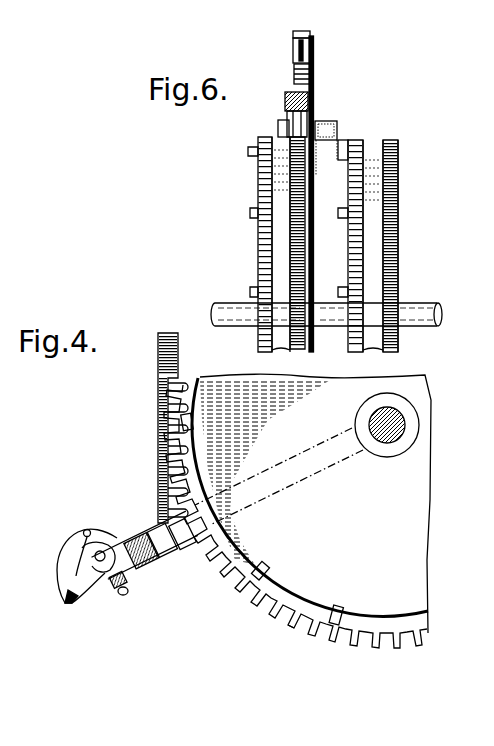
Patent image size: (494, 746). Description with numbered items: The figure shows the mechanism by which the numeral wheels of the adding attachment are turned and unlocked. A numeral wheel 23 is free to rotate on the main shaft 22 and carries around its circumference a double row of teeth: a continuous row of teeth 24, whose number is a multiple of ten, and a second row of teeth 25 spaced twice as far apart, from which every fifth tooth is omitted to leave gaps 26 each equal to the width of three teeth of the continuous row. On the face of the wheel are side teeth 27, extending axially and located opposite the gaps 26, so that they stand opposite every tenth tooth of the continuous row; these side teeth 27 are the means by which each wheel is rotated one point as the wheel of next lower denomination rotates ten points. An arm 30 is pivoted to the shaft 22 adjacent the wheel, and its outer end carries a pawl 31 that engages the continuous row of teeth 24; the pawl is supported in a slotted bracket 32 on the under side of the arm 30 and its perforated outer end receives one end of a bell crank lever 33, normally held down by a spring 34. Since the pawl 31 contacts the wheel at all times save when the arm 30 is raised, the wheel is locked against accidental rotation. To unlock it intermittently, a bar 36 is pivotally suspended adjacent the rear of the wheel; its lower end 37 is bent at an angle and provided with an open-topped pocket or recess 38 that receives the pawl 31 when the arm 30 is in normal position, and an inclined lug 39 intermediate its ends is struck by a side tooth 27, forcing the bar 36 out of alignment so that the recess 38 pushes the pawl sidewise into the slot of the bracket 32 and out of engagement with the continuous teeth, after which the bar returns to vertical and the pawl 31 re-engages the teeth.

In FIG. 6, the main shaft 22 is at (442, 316).
In FIG. 4, the main shaft 22 is at (419, 425).
In FIG. 6, the numeral wheel 23 is at (281, 252).
In FIG. 4, the numeral wheel 23 is at (418, 562).
In FIG. 6, the continuous row of teeth 24 is at (398, 142).
In FIG. 4, the continuous row of teeth 24 is at (330, 640).
In FIG. 6, the second row of teeth 25 is at (385, 138).
In FIG. 4, the second row of teeth 25 is at (294, 636).
In FIG. 6, the gaps 26 is at (345, 140).
In FIG. 6, the side teeth 27 is at (248, 152).
In FIG. 4, the side teeth 27 is at (266, 572).
In FIG. 6, the arm 30 is at (318, 55).
In FIG. 4, the arm 30 is at (298, 468).
In FIG. 6, the pawl 31 is at (288, 112).
In FIG. 4, the pawl 31 is at (166, 568).
In FIG. 6, the slotted bracket 32 is at (298, 92).
In FIG. 4, the slotted bracket 32 is at (143, 578).
In FIG. 6, the bell crank lever 33 is at (302, 31).
In FIG. 4, the bell crank lever 33 is at (80, 600).
In FIG. 6, the spring 34 is at (298, 52).
In FIG. 4, the spring 34 is at (70, 548).
In FIG. 4, the bar 36 is at (158, 355).
In FIG. 6, the lower end of bar 37 is at (320, 121).
In FIG. 6, the pocket or recess 38 is at (280, 127).
In FIG. 4, the pocket or recess 38 is at (185, 562).
In FIG. 6, the inclined lug 39 is at (331, 166).